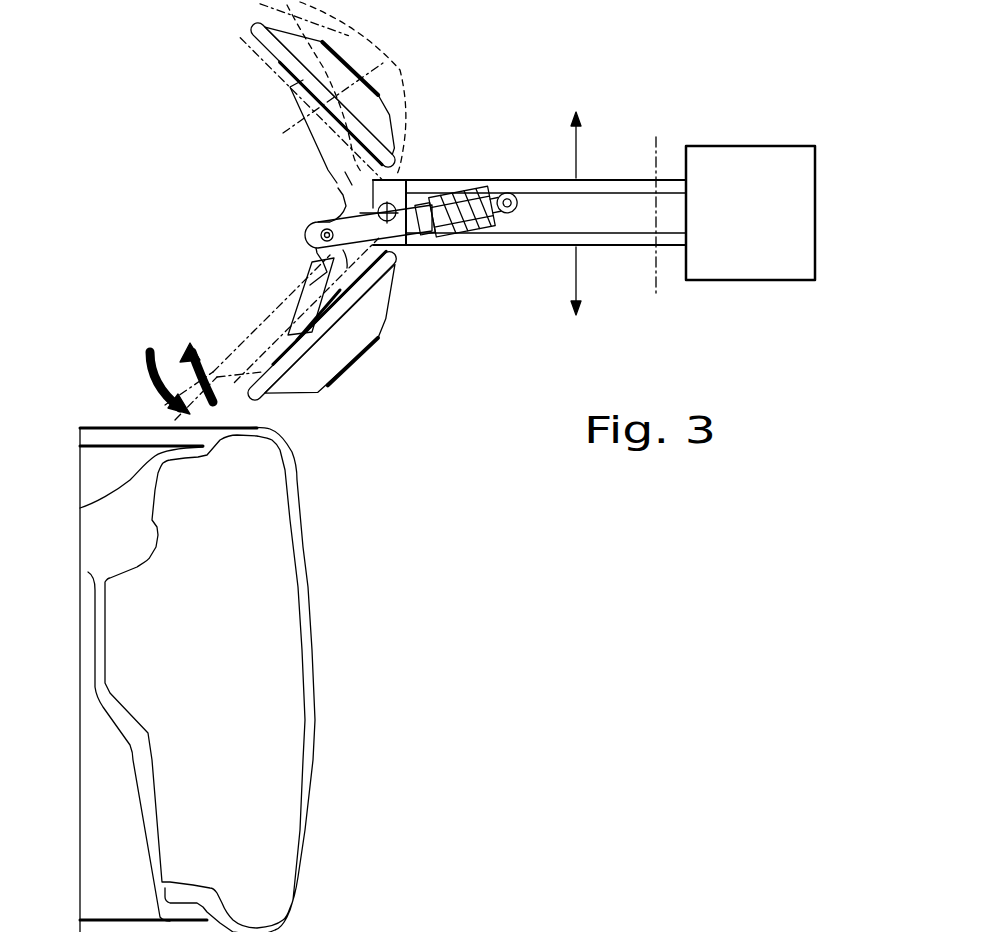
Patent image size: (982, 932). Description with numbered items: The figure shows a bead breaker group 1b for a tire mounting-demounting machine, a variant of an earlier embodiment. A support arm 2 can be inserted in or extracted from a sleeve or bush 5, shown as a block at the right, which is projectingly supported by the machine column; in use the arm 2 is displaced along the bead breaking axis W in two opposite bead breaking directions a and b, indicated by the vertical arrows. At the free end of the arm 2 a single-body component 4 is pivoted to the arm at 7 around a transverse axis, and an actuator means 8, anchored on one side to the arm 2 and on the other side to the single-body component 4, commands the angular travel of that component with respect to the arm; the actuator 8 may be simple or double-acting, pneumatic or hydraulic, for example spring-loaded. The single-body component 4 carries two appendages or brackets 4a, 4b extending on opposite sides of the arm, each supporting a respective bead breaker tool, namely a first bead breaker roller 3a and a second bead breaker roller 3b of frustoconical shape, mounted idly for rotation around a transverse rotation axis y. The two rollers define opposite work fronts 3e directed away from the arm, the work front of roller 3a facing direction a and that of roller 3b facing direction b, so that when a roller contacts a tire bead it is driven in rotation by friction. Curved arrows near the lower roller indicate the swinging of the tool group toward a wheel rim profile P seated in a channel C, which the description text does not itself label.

The bead breaker group 1b is at (432, 290).
The support arm 2 is at (498, 247).
The first bead breaker tool 3a is at (385, 320).
The second bead breaker tool 3b is at (390, 115).
The work fronts 3e is at (252, 27).
The single-body component 4 is at (301, 210).
The first appendage or bracket 4a is at (330, 168).
The second appendage or bracket 4b is at (297, 327).
The sleeve or bush 5 is at (708, 280).
The pivot 7 is at (392, 208).
The actuator means 8 is at (453, 242).
The bead breaking direction a is at (590, 349).
The bead breaking direction b is at (590, 105).
The bead breaking axis W is at (658, 213).
The transverse rotation axis y is at (305, 332).
The channel C is at (128, 428).
The profile P is at (312, 620).